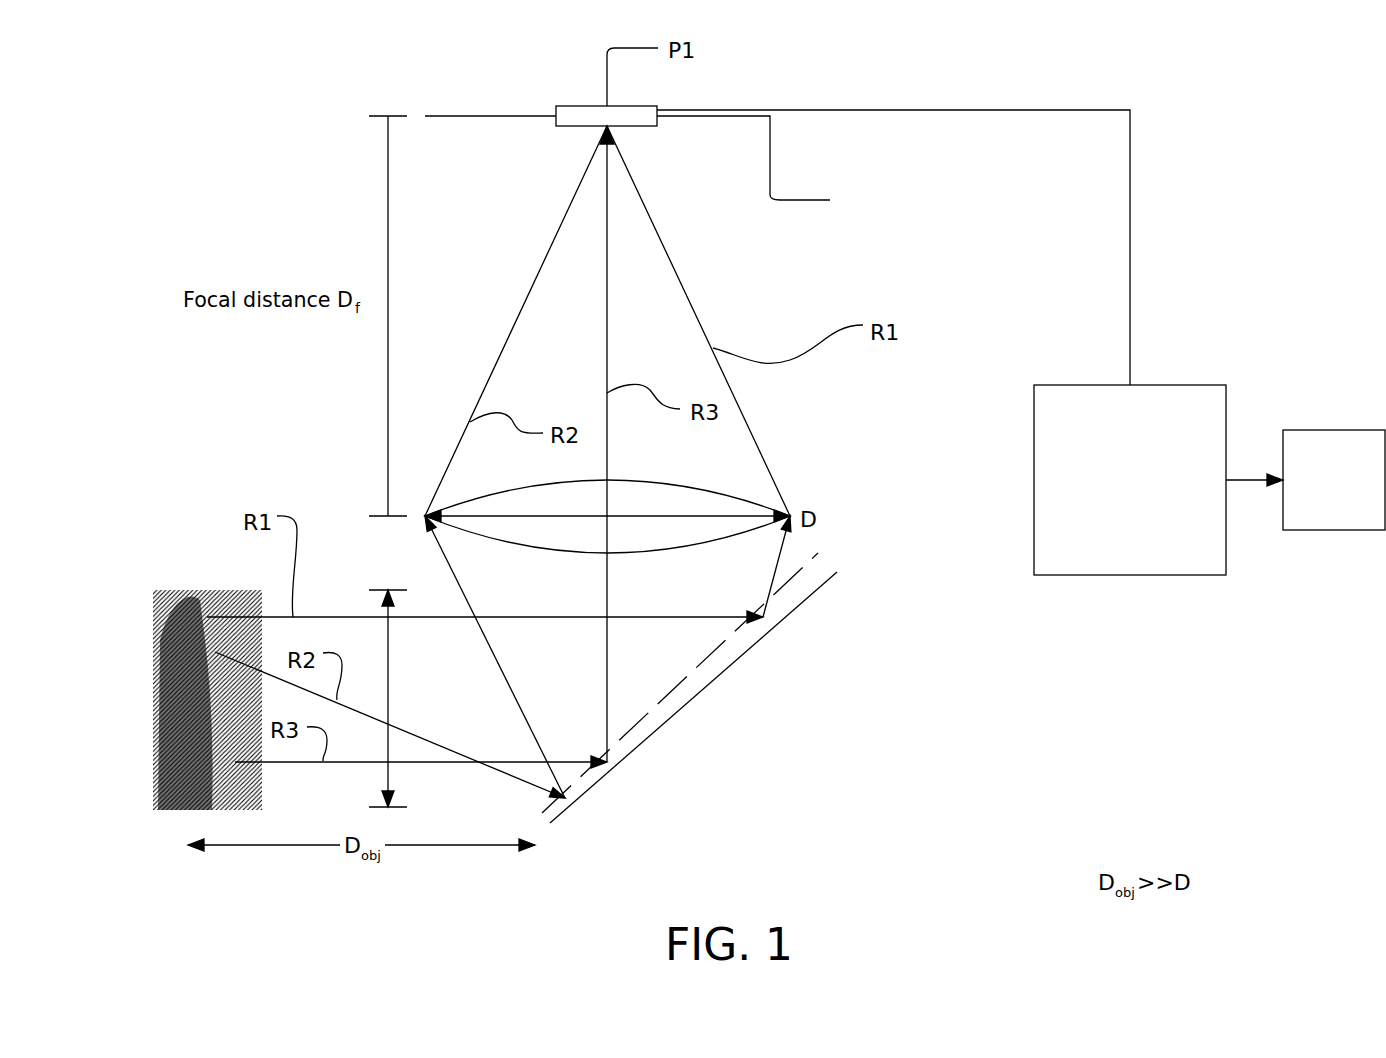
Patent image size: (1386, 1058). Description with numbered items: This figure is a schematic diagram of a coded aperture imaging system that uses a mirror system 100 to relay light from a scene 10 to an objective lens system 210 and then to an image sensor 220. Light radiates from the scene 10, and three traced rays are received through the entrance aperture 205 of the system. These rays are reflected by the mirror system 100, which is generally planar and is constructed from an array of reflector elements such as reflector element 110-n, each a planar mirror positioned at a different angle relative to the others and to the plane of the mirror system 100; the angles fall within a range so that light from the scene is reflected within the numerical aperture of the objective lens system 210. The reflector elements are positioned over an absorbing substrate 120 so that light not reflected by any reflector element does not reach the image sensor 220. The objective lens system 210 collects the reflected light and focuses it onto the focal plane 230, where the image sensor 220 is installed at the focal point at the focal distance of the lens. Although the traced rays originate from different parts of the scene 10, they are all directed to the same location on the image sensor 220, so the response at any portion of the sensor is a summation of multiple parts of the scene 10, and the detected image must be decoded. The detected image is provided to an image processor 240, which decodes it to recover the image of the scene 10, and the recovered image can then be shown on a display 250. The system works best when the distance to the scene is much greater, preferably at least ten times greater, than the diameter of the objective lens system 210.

The scene 10 is at (208, 590).
The mirror system 100 is at (768, 752).
The reflector element 110-n is at (577, 800).
The absorbing substrate 120 is at (811, 595).
The entrance aperture 205 is at (388, 662).
The objective lens system 210 is at (727, 487).
The image sensor 220 is at (657, 127).
The focal plane 230 is at (767, 166).
The image processor 240 is at (1130, 480).
The display 250 is at (1334, 480).